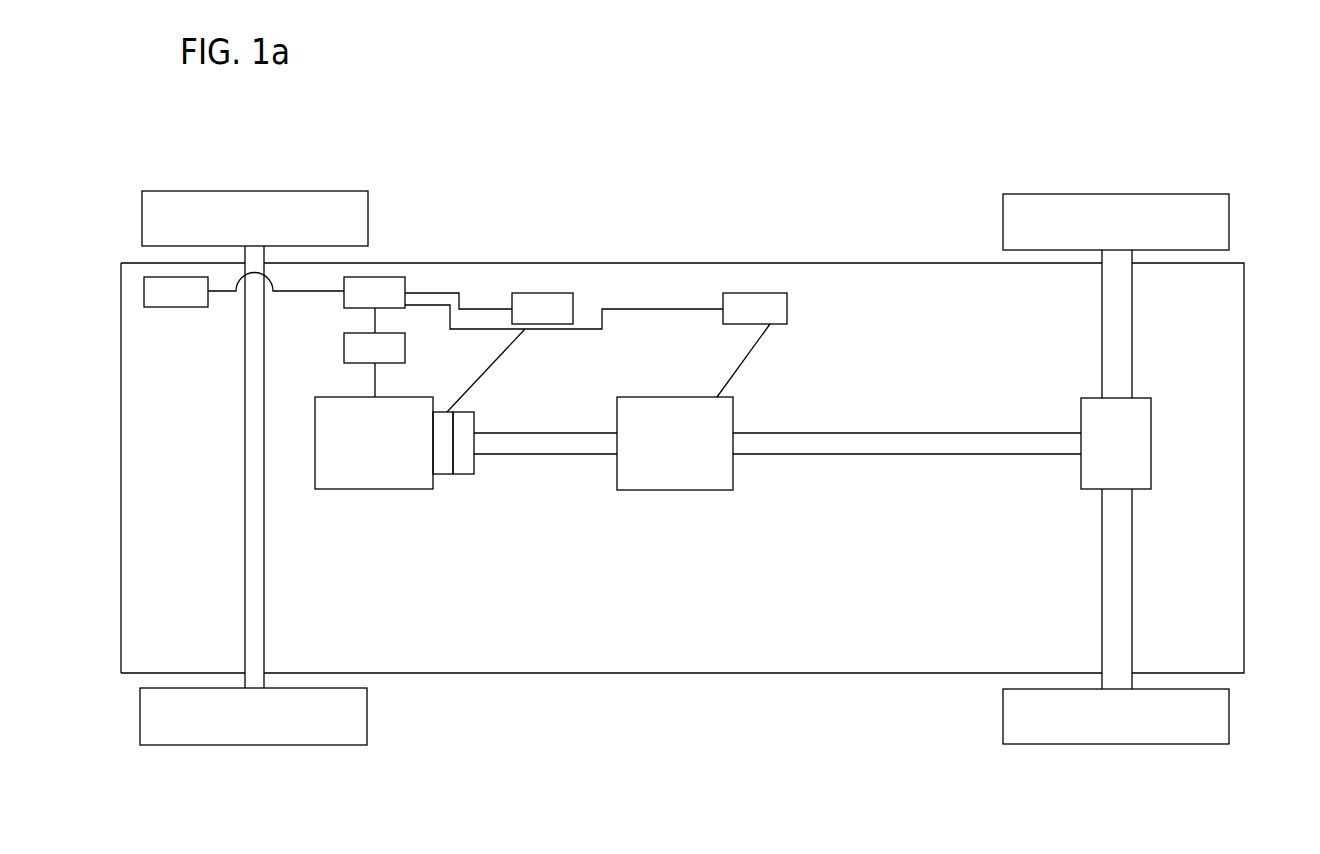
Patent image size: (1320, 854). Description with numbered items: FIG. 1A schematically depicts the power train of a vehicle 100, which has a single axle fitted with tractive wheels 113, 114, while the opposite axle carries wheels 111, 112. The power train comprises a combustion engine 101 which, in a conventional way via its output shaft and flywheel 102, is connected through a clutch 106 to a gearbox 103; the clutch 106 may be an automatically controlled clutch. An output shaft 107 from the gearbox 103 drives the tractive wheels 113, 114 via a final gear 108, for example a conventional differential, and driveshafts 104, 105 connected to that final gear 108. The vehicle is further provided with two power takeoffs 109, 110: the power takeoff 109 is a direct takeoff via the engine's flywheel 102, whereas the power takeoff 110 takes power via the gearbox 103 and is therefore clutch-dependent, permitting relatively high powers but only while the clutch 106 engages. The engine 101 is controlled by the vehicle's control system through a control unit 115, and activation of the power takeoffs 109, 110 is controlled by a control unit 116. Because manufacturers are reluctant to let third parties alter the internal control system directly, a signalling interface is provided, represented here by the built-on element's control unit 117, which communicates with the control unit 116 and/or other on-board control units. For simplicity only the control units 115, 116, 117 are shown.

The vehicle 100 is at (586, 98).
The combustion engine 101 is at (347, 487).
The flywheel 102 is at (440, 418).
The gearbox 103 is at (655, 418).
The driveshaft 104 is at (1120, 323).
The driveshaft 105 is at (1127, 600).
The clutch 106 is at (462, 466).
The output shaft 107 is at (1000, 447).
The final gear 108 is at (1145, 441).
The power takeoff 109 is at (540, 300).
The power takeoff 110 is at (760, 303).
The front left wheel 111 is at (358, 217).
The front right wheel 112 is at (362, 722).
The tractive wheel 113 is at (1225, 215).
The tractive wheel 114 is at (1225, 720).
The control unit 115 is at (374, 348).
The control unit 116 is at (374, 292).
The control unit 117 is at (176, 292).